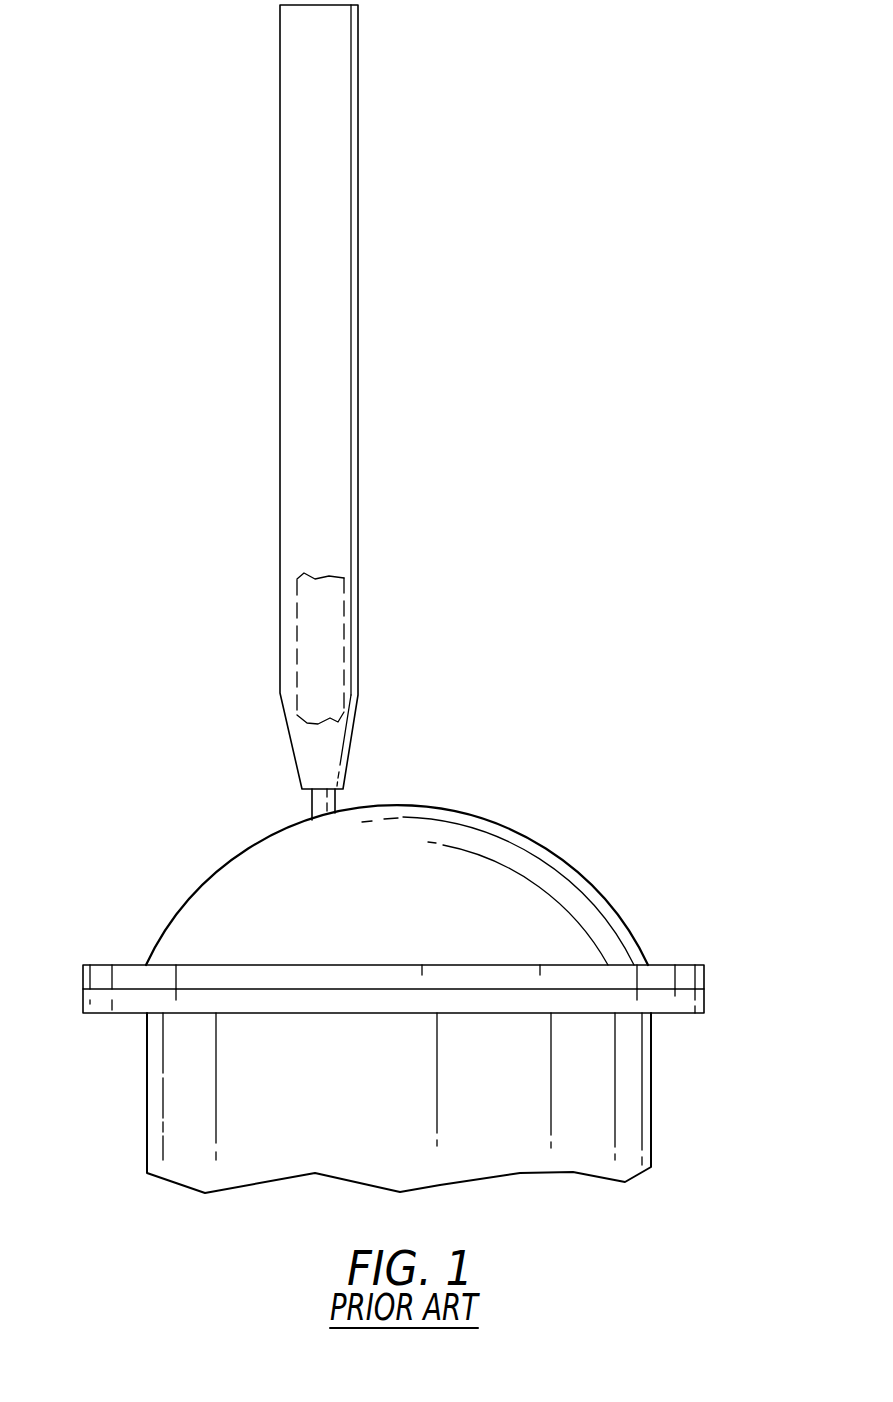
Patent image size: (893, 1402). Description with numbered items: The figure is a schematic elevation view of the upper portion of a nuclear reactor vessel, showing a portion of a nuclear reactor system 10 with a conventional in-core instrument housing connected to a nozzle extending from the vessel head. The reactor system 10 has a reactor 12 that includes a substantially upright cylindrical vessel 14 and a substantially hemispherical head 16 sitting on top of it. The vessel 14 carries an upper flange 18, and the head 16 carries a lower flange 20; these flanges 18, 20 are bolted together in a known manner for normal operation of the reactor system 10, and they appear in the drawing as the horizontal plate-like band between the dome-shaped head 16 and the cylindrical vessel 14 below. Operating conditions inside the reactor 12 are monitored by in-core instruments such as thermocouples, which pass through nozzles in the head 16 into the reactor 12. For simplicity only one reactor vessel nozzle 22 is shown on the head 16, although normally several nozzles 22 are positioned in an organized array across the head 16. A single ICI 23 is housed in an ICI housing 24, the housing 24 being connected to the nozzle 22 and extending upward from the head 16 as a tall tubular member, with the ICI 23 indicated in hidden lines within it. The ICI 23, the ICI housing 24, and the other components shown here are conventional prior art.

The nuclear reactor system 10 is at (152, 410).
The reactor 12 is at (175, 1078).
The cylindrical vessel 14 is at (652, 1087).
The hemispherical head 16 is at (577, 868).
The upper flange 18 is at (704, 997).
The lower flange 20 is at (704, 972).
The reactor vessel nozzle 22 is at (303, 788).
The ICI 23 is at (330, 638).
The ICI housing 24 is at (280, 254).